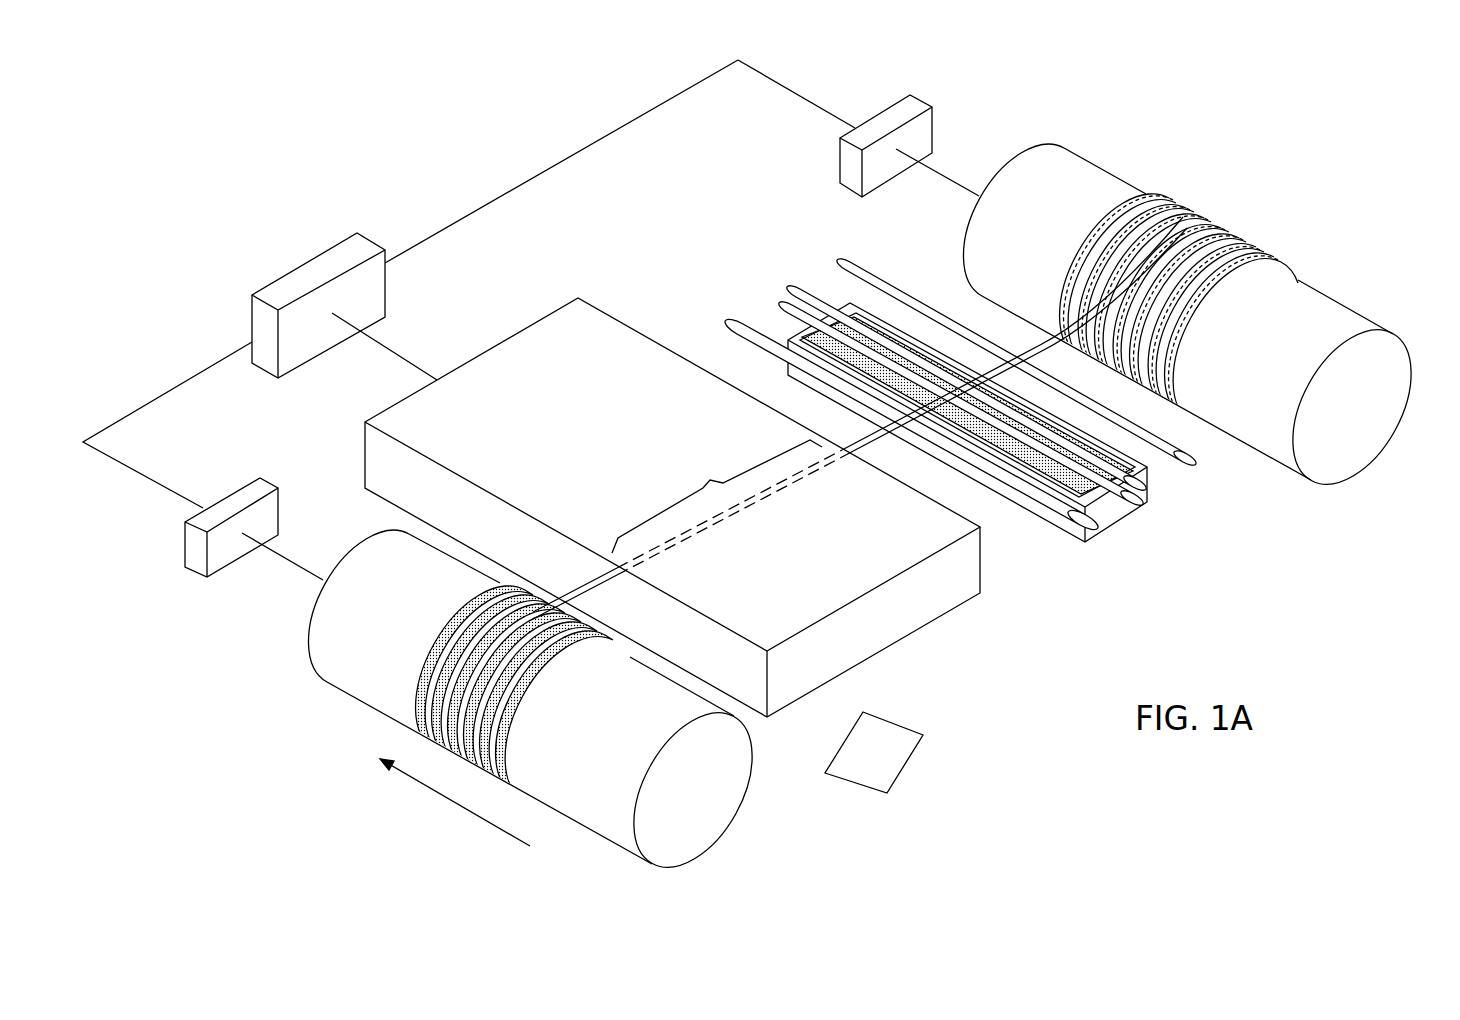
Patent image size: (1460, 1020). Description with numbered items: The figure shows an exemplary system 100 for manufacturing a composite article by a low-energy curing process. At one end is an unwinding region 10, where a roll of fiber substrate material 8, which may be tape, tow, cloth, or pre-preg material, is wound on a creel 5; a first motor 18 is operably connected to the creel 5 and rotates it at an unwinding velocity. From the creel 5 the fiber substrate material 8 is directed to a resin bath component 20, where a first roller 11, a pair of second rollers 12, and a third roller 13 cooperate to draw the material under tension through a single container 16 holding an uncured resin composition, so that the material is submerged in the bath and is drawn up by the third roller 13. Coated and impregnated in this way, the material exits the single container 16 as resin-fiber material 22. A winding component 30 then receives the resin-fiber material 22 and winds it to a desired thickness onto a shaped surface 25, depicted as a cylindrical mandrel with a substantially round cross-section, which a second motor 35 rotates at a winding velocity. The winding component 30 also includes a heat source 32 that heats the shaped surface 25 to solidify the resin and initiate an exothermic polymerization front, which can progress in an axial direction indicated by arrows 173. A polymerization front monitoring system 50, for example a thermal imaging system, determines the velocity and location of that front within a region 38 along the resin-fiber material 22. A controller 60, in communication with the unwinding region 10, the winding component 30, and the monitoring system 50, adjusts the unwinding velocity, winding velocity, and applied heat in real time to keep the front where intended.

The system 100 is at (337, 140).
The unwinding region 10 is at (1383, 282).
The creel 5 is at (1383, 427).
The fiber substrate material 8 is at (1033, 346).
The first roller 11 is at (1189, 462).
The second rollers 12 is at (1136, 490).
The third roller 13 is at (770, 340).
The single container 16 is at (1097, 524).
The first motor 18 is at (917, 125).
The resin bath component 20 is at (1234, 594).
The resin-fiber material 22 is at (882, 452).
The shaped surface 25 is at (327, 637).
The winding component 30 is at (740, 840).
The heat source 32 is at (886, 752).
The second motor 35 is at (243, 497).
The region 38 is at (717, 496).
The polymerization front monitoring system 50 is at (582, 336).
The controller 60 is at (308, 267).
The arrows 173 is at (412, 792).